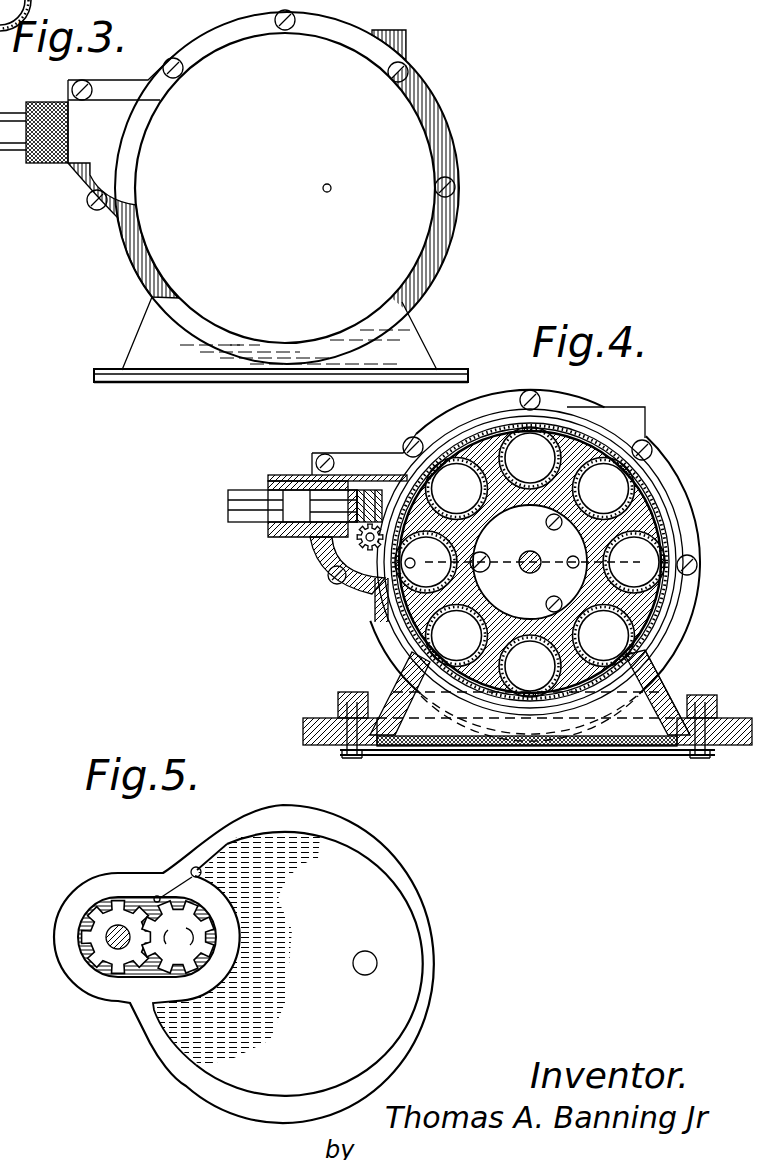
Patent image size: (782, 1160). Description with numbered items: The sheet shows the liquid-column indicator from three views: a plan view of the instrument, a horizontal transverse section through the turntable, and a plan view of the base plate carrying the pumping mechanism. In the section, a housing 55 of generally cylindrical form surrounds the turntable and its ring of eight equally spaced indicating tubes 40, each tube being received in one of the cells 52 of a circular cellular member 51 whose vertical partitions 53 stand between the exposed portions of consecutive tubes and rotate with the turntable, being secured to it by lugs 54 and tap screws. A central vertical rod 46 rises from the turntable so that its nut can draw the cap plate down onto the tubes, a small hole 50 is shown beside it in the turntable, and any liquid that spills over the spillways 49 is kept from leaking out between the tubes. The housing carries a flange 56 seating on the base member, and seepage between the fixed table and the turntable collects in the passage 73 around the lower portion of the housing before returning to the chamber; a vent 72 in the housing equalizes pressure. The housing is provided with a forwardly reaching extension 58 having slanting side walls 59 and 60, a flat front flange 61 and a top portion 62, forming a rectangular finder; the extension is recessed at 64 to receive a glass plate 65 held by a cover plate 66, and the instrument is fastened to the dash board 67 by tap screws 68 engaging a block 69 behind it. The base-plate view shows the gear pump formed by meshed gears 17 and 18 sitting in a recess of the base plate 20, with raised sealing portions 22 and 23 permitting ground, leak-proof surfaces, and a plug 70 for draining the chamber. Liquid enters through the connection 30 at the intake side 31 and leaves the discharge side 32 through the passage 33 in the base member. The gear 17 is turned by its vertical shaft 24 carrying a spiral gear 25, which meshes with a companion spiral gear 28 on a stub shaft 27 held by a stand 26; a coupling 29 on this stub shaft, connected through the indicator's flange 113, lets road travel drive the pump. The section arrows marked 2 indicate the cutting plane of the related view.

In FIG. 4, the section line 2 is at (260, 548).
In FIG. 5, the gear 17 is at (110, 900).
In FIG. 5, the gear 18 is at (198, 967).
In FIG. 5, the base plate 20 is at (338, 880).
In FIG. 5, the raised sealing portion 22 is at (403, 898).
In FIG. 5, the raised sealing portion 23 is at (230, 917).
In FIG. 4, the vertical shaft 24 is at (357, 547).
In FIG. 5, the vertical shaft 24 is at (108, 940).
In FIG. 4, the spiral gear 25 is at (346, 553).
In FIG. 4, the stand 26 is at (313, 477).
In FIG. 4, the stub shaft 27 is at (332, 500).
In FIG. 4, the spiral gear 28 is at (372, 488).
In FIG. 4, the coupling 29 is at (283, 474).
In FIG. 5, the connection 30 is at (163, 897).
In FIG. 5, the intake side 31 is at (130, 897).
In FIG. 5, the discharge side 32 is at (137, 968).
In FIG. 4, the passage 33 is at (402, 569).
In FIG. 4, the indicating tubes 40 is at (470, 403).
In FIG. 4, the vertical rod 46 is at (518, 567).
In FIG. 4, the spillways 49 is at (648, 425).
In FIG. 4, the hole 50 is at (568, 567).
In FIG. 4, the cellular member 51 is at (669, 516).
In FIG. 4, the cells 52 is at (560, 430).
In FIG. 4, the vertical partitions 53 is at (609, 432).
In FIG. 4, the lugs 54 is at (486, 552).
In FIG. 3, the housing 55 is at (400, 132).
In FIG. 4, the housing 55 is at (657, 641).
In FIG. 3, the flange 56 is at (447, 257).
In FIG. 4, the flange 56 is at (673, 578).
In FIG. 3, the extension 58 is at (392, 333).
In FIG. 4, the extension 58 is at (662, 691).
In FIG. 4, the slanting side wall 59 is at (417, 712).
In FIG. 4, the slanting side wall 60 is at (644, 703).
In FIG. 3, the front flange 61 is at (106, 368).
In FIG. 4, the front flange 61 is at (338, 748).
In FIG. 3, the top portion 62 is at (160, 336).
In FIG. 4, the recess 64 is at (677, 760).
In FIG. 4, the glass plate 65 is at (622, 760).
In FIG. 3, the cover plate 66 is at (112, 386).
In FIG. 4, the cover plate 66 is at (378, 746).
In FIG. 4, the dash board 67 is at (330, 718).
In FIG. 4, the tap screws 68 is at (350, 751).
In FIG. 4, the block 69 is at (338, 694).
In FIG. 5, the plug 70 is at (378, 963).
In FIG. 3, the vent 72 is at (326, 193).
In FIG. 4, the passage 73 is at (666, 497).
In FIG. 4, the flange 113 is at (287, 546).